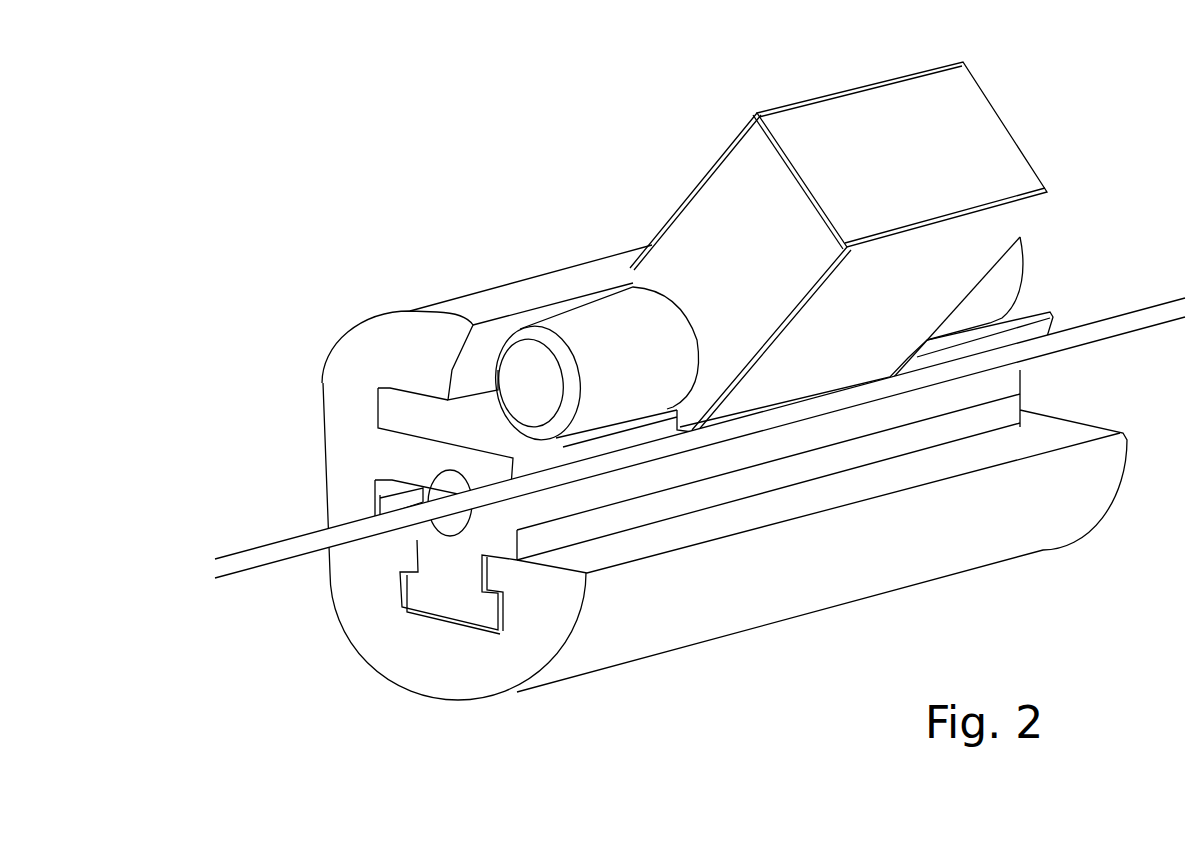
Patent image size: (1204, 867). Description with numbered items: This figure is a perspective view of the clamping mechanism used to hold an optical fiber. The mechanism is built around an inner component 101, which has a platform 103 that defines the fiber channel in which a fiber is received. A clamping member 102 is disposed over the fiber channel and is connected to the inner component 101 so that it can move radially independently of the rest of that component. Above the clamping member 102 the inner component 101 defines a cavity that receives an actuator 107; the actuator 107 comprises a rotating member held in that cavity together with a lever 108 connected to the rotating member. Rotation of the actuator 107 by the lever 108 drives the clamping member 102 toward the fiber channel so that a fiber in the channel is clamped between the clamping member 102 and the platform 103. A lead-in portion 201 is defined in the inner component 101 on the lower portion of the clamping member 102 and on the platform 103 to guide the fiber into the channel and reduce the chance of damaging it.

The inner component 101 is at (372, 617).
The clamping member 102 is at (472, 467).
The platform 103 is at (390, 502).
The actuator 107 is at (590, 327).
The lever 108 is at (720, 240).
The lead-in portion 201 is at (463, 497).